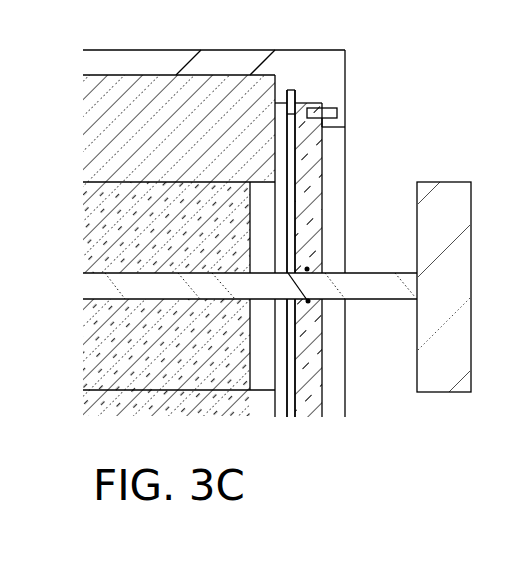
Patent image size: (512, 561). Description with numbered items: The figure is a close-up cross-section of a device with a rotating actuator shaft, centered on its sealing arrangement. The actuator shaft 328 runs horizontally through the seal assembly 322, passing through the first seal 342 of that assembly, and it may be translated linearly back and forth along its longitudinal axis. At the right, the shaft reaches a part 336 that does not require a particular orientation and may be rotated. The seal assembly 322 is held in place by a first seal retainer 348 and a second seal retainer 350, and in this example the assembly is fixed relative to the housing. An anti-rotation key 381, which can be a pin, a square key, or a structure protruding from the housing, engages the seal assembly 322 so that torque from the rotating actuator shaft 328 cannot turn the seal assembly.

The seal assembly 322 is at (287, 428).
The actuator shaft 328 is at (377, 273).
The part 336 is at (471, 220).
The first seal 342 is at (307, 269).
The first seal retainer 348 is at (342, 76).
The second seal retainer 350 is at (289, 90).
The anti-rotation key 381 is at (338, 113).